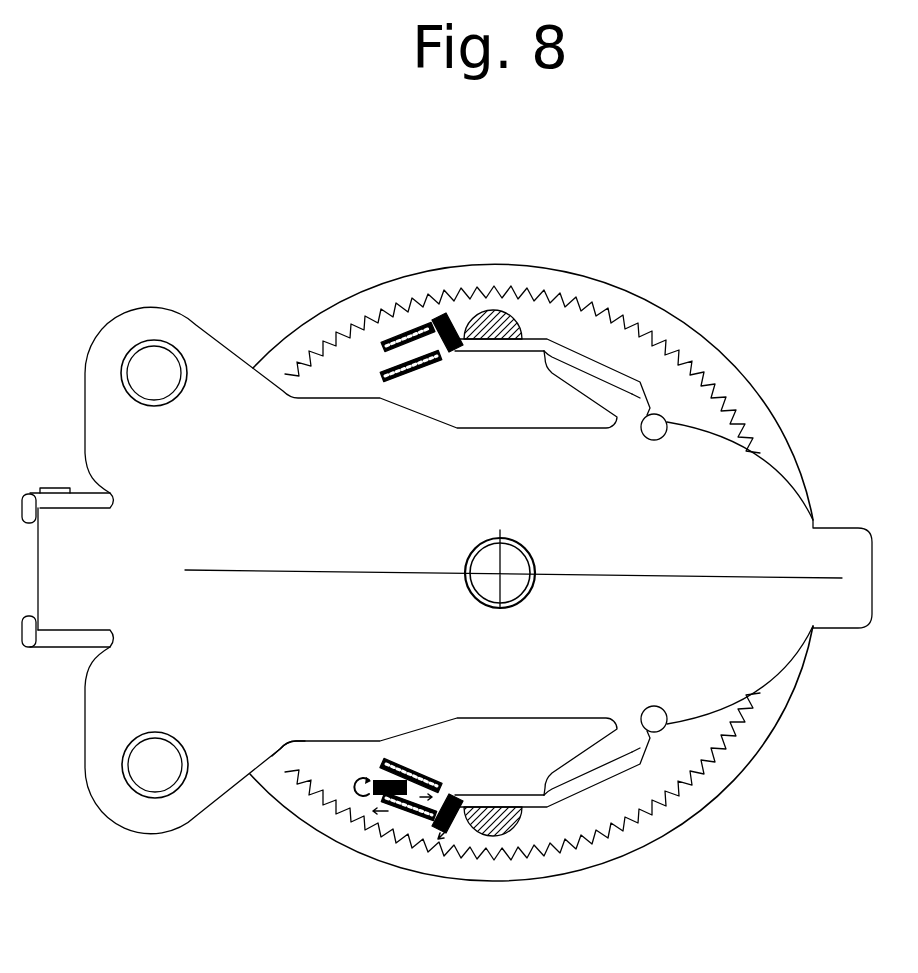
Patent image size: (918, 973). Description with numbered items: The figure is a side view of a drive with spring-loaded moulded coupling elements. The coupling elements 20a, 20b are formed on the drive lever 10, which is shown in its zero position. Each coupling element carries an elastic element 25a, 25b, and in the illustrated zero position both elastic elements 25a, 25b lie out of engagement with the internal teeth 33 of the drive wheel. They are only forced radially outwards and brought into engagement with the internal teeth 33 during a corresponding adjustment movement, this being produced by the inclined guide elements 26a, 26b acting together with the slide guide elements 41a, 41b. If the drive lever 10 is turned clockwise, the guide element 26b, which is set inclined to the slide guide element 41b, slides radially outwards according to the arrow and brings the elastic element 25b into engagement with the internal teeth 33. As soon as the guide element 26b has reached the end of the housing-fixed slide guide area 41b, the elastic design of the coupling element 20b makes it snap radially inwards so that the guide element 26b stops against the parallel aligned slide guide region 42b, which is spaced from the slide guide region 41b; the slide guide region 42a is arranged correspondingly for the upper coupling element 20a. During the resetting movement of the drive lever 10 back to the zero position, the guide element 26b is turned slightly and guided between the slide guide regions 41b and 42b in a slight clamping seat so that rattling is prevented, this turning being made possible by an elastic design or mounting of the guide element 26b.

The drive lever 10 is at (238, 380).
The internal teeth 33 is at (280, 750).
The coupling element 20a is at (605, 383).
The coupling element 20b is at (619, 752).
The elastic element 25a is at (488, 310).
The elastic element 25b is at (507, 837).
The guide element 26a is at (437, 318).
The guide element 26b is at (450, 830).
The slide guide element 41a is at (393, 340).
The slide guide element 41b is at (407, 814).
The slide guide region 42a is at (381, 370).
The slide guide region 42b is at (385, 754).